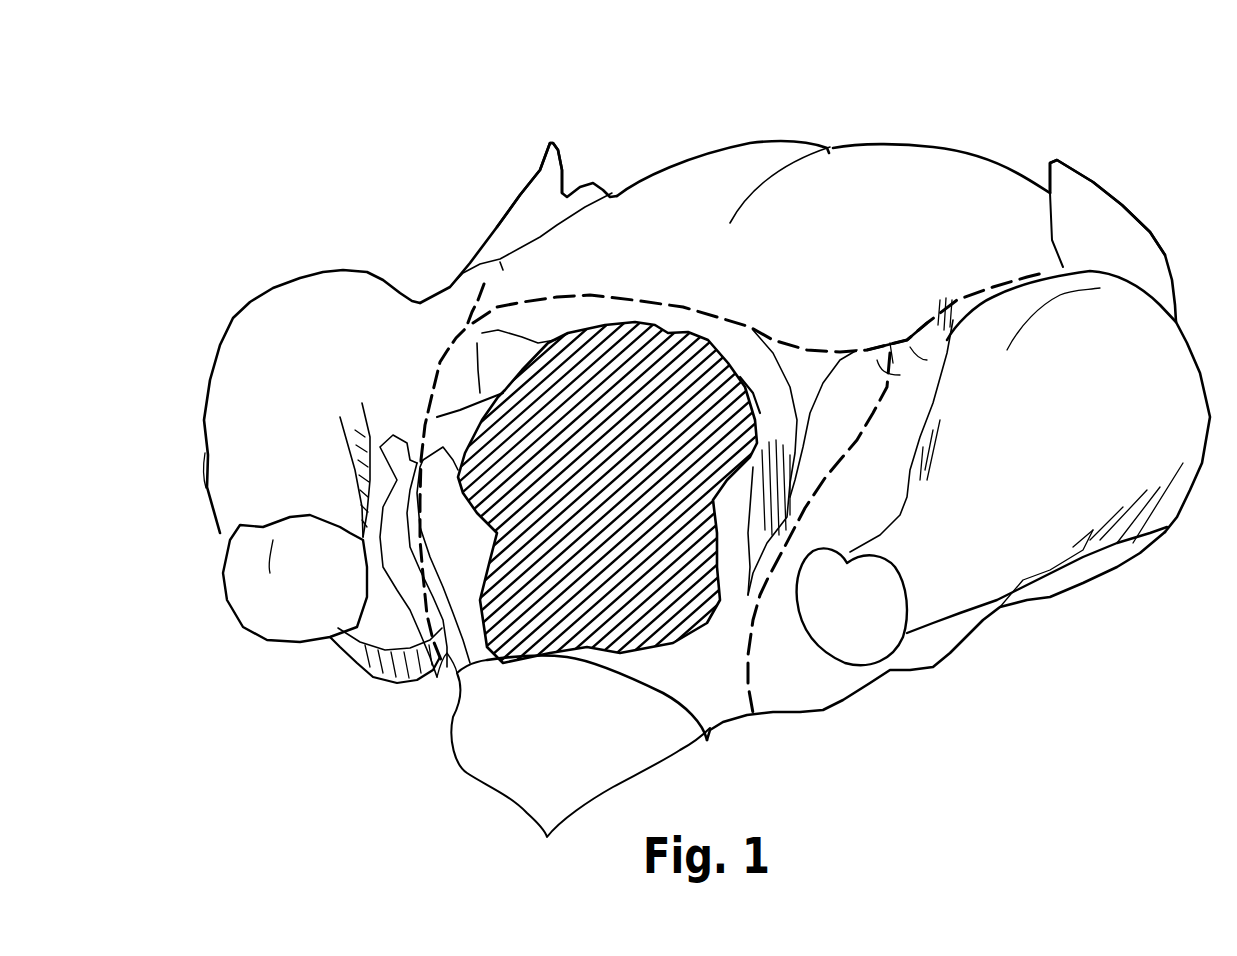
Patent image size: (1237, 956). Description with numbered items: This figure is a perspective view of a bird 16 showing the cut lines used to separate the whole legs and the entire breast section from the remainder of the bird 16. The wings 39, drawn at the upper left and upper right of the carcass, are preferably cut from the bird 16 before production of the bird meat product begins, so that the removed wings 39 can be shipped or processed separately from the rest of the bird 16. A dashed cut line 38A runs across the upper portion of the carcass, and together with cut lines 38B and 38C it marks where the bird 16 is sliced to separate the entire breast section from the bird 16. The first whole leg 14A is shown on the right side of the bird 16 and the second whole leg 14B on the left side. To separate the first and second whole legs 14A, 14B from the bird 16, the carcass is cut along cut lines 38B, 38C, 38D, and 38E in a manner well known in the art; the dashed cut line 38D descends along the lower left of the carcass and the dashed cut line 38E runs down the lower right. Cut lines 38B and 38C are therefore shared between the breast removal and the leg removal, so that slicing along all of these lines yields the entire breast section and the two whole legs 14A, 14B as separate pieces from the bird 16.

The bird 16 is at (1120, 160).
The first whole leg 14A is at (1072, 418).
The second whole leg 14B is at (343, 358).
The cut line 38A is at (613, 295).
The cut line 38B is at (967, 293).
The cut line 38C is at (503, 267).
The cut line 38D is at (423, 573).
The cut line 38E is at (750, 660).
The wings 39 is at (543, 167).